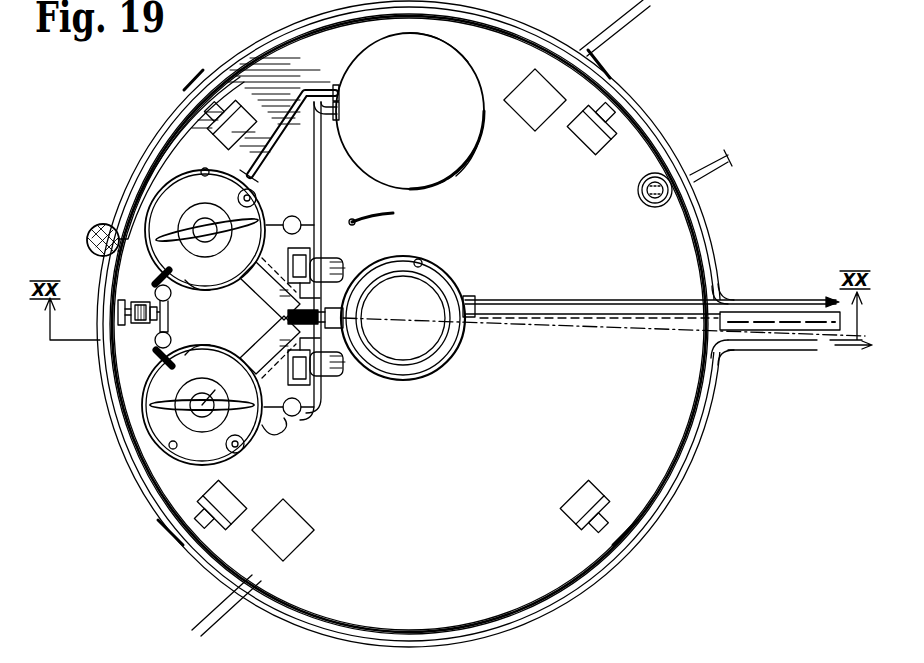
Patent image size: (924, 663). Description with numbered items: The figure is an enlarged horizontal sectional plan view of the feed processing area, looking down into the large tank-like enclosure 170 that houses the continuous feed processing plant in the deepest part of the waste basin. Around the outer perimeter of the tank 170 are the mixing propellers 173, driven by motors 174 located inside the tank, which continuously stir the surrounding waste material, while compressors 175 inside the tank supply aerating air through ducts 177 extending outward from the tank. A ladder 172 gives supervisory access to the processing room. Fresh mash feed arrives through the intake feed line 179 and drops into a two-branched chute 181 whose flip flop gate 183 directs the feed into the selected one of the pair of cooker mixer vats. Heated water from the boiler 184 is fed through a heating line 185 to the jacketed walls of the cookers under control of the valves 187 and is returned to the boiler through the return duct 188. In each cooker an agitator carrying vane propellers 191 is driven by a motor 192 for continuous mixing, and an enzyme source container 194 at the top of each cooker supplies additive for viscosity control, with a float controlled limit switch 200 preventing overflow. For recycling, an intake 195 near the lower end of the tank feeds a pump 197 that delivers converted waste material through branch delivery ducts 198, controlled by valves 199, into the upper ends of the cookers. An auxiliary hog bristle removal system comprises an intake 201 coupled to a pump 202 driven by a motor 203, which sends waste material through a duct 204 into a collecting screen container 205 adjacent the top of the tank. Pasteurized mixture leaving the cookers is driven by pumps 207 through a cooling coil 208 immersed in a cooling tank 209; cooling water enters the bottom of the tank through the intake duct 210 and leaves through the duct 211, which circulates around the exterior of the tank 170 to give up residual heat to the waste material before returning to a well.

The tank-like enclosure 170 is at (698, 442).
The ladder 172 is at (396, 214).
The propellers 173 is at (198, 72).
The motors 174 is at (248, 128).
The compressors 175 is at (537, 126).
The ducts 177 is at (628, 18).
The intake feed line 179 is at (772, 312).
The chute 181 is at (270, 307).
The flip flop gate 183 is at (285, 318).
The boiler 184 is at (458, 168).
The vertical pipe 185 is at (322, 168).
The valves 187 is at (320, 236).
The return duct 188 is at (290, 96).
The agitating vane propellers 191 is at (188, 238).
The motor 192 is at (248, 232).
The source container 194 is at (254, 196).
The intake 195 is at (118, 312).
The pump 197 is at (134, 324).
The branch delivery ducts 198 is at (155, 288).
The valves 199 is at (207, 288).
The float controlled limit switch 200 is at (208, 172).
The intake 201 is at (698, 162).
The pump 202 is at (662, 206).
The motor 203 is at (641, 200).
The duct 204 is at (468, 34).
The collecting screen container 205 is at (96, 230).
The pumps 207 is at (305, 266).
The cooling coil 208 is at (440, 362).
The cooling tank 209 is at (455, 284).
The intake duct 210 is at (653, 326).
The duct 211 is at (570, 300).